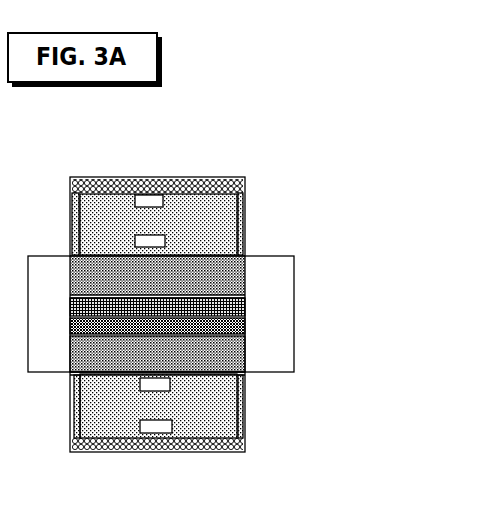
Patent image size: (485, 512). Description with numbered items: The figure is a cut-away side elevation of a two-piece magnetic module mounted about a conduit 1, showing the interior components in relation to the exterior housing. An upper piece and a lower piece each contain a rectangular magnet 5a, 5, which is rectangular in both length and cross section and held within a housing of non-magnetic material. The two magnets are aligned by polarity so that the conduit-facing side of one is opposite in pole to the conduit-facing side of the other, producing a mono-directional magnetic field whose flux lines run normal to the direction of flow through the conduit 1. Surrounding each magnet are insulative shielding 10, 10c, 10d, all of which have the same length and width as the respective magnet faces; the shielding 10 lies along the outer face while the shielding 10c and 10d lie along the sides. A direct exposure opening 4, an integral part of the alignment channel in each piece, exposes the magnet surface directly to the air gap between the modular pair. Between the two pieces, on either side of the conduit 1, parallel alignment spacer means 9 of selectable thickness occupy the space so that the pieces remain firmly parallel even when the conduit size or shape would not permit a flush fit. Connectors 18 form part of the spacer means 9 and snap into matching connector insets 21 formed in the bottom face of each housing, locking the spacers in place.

The conduit 1 is at (294, 257).
The rectangular opening 4 is at (243, 247).
The magnet 5 is at (240, 413).
The magnet 5a is at (249, 212).
The parallel alignment spacer means 9 is at (245, 308).
The insulative shielding 10 is at (241, 186).
The insulative shielding 10c is at (243, 200).
The insulative shielding 10d is at (80, 203).
The connectors 18 is at (245, 294).
The connector insets 21 is at (245, 342).